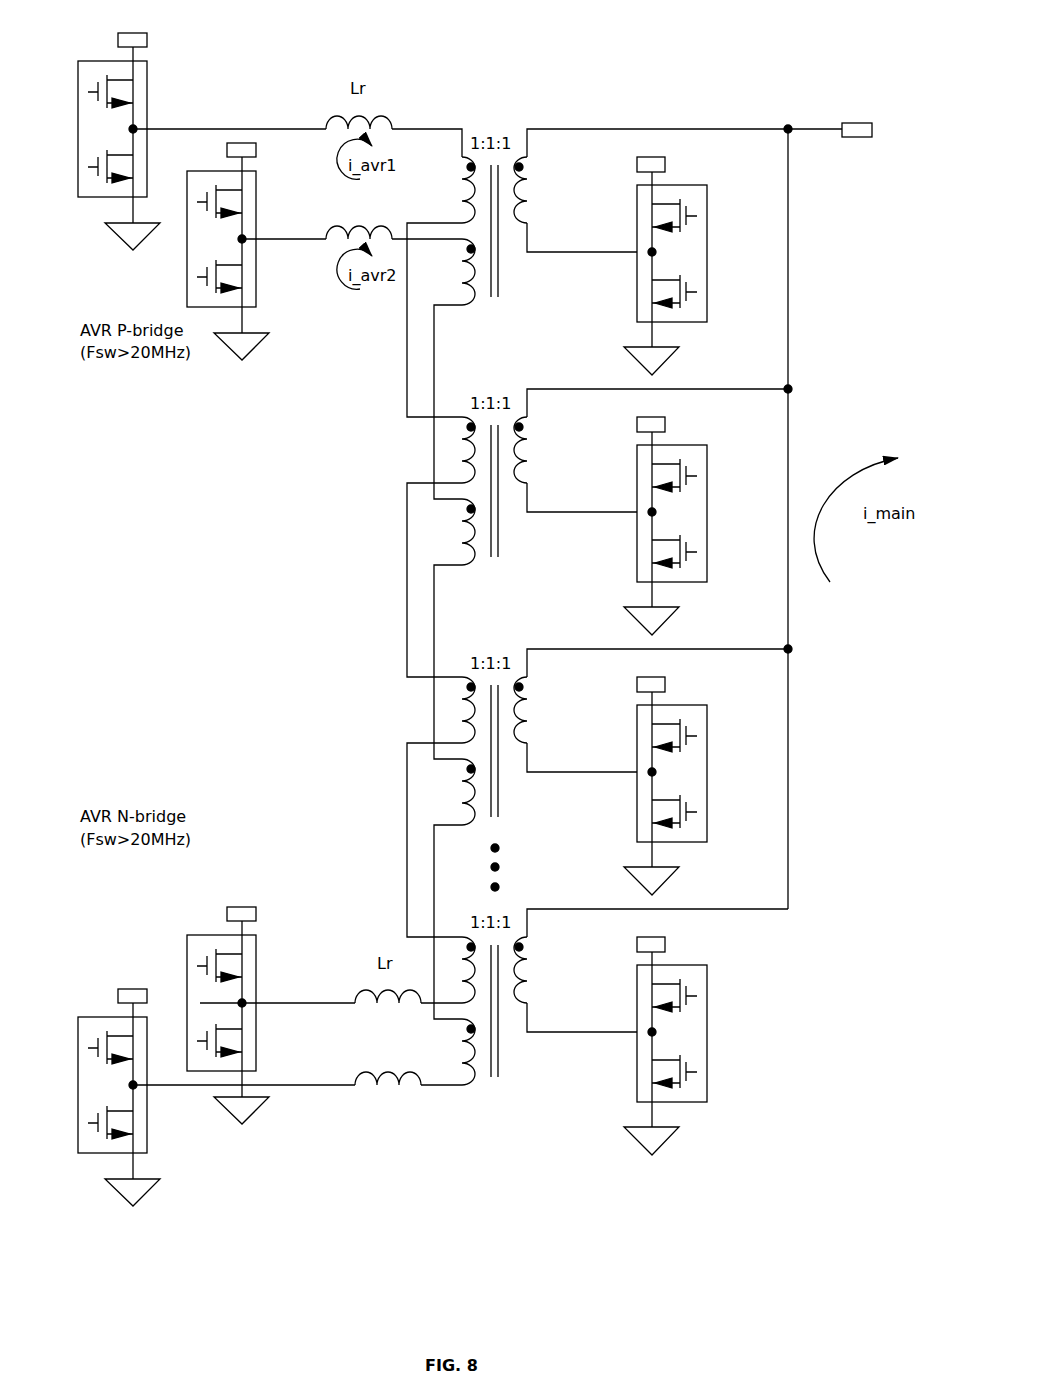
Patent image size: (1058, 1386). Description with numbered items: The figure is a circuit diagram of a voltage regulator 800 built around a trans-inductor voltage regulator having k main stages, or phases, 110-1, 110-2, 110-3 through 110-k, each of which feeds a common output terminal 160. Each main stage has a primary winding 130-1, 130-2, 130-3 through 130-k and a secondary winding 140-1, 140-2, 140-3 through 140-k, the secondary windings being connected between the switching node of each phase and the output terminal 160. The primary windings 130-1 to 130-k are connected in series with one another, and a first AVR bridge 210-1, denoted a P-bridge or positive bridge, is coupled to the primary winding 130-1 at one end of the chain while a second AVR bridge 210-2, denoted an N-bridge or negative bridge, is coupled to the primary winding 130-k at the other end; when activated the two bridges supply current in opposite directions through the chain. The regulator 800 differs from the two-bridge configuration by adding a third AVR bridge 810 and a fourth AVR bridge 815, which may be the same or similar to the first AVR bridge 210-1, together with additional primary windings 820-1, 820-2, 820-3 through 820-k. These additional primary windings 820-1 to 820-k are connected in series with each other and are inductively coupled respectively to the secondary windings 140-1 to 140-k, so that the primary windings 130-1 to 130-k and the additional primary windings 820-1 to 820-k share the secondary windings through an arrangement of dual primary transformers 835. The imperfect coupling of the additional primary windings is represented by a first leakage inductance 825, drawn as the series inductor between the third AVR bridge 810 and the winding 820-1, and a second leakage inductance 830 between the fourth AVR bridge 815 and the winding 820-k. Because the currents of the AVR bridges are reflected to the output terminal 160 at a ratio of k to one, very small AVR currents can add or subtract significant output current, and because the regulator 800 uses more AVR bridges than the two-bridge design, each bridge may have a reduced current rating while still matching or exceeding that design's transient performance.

The voltage regulator 800 is at (477, 1246).
The first AVR bridge 210-1 is at (65, 113).
The third AVR bridge 810 is at (175, 264).
The first leakage inductance 825 is at (333, 217).
The primary winding 130-1 is at (447, 170).
The secondary winding 140-1 is at (538, 178).
The additional primary winding 820-1 is at (448, 278).
The main stage 110-1 is at (826, 267).
The output terminal 160 is at (870, 122).
The primary winding 130-2 is at (445, 443).
The secondary winding 140-2 is at (540, 438).
The additional primary winding 820-2 is at (445, 541).
The main stage 110-2 is at (821, 430).
The primary winding 130-3 is at (445, 704).
The secondary winding 140-3 is at (540, 698).
The additional primary winding 820-3 is at (445, 801).
The main stage 110-3 is at (826, 783).
The primary winding 130-k is at (445, 963).
The secondary winding 140-k is at (540, 958).
The additional primary winding 820-k is at (452, 1053).
The dual primary transformer 835 is at (516, 1084).
The main stage 110-k is at (826, 1045).
The second AVR bridge 210-2 is at (178, 924).
The fourth AVR bridge 815 is at (66, 1072).
The second leakage inductance 830 is at (367, 1093).